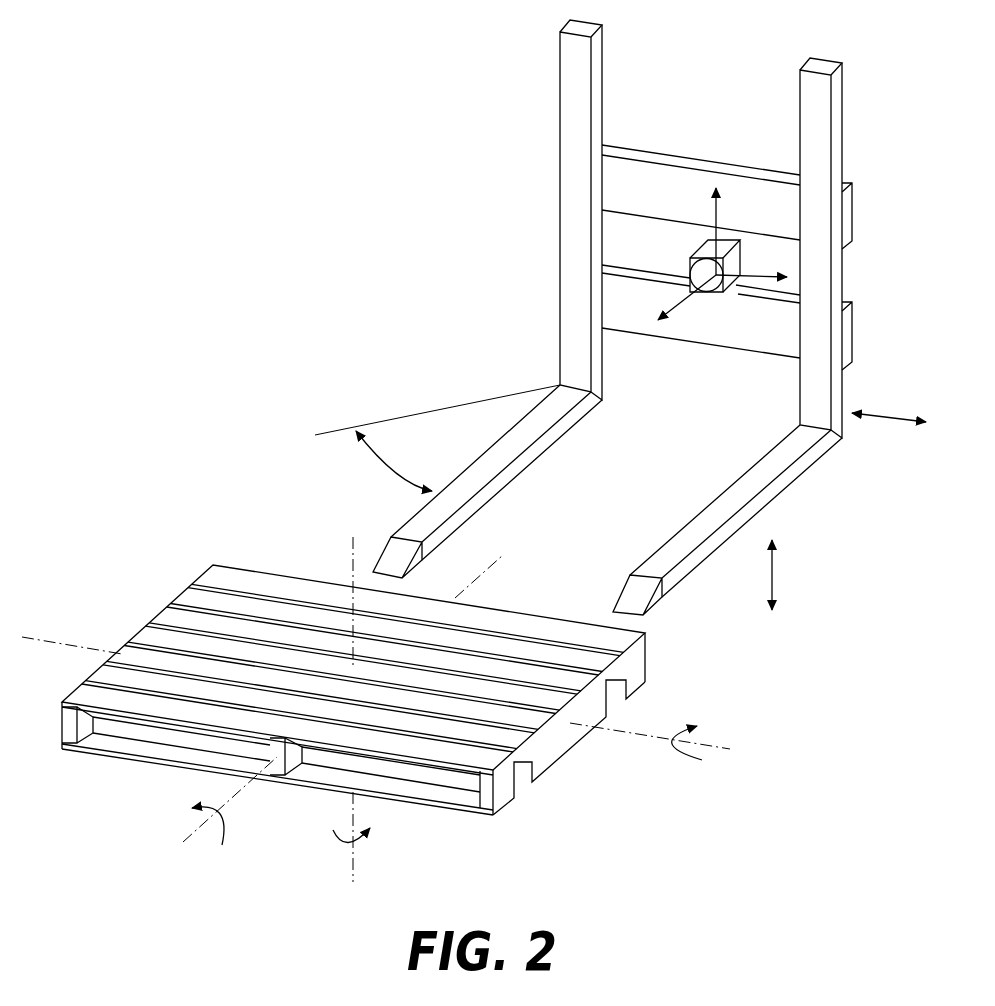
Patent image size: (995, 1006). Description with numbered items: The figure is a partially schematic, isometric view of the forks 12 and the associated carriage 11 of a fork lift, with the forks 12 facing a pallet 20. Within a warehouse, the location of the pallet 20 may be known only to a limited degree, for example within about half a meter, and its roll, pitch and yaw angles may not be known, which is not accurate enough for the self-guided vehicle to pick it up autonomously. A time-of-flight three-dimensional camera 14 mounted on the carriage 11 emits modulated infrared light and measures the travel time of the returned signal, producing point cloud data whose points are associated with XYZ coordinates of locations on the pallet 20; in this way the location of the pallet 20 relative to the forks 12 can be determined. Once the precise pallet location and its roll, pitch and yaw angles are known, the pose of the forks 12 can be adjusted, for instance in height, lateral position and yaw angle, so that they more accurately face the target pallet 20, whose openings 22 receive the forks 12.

The carriage 11 is at (538, 90).
The forks 12 is at (413, 521).
The time-of-flight 3D camera 14 is at (725, 247).
The pallet 20 is at (147, 633).
The fork pocket 22 is at (173, 728).